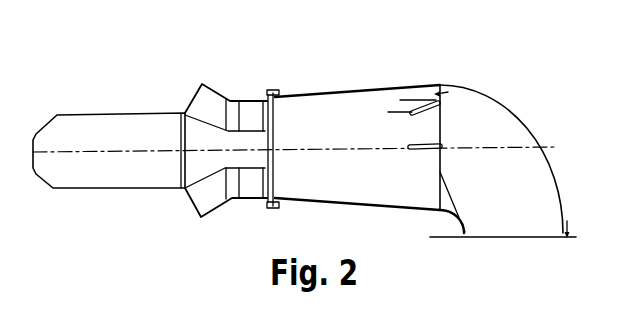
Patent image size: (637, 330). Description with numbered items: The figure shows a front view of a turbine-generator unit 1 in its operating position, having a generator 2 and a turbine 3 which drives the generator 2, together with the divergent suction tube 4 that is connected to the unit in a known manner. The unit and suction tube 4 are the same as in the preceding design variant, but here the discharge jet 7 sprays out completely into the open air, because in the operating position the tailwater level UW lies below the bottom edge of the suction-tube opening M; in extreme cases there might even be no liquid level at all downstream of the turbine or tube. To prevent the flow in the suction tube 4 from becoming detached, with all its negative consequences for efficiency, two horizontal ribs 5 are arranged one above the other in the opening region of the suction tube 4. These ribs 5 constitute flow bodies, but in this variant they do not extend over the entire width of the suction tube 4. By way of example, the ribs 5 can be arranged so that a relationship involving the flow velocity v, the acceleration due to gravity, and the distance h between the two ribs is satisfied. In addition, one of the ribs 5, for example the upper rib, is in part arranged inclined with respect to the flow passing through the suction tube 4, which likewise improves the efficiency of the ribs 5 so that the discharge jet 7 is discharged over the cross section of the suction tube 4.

The turbine-generator unit 1 is at (150, 206).
The generator 2 is at (135, 133).
The turbine 3 is at (252, 122).
The suction tube 4 is at (340, 93).
The horizontal rib 5 is at (432, 145).
The discharge jet 7 is at (500, 182).
The flow velocity v is at (446, 101).
The distance between the two ribs h is at (392, 117).
The suction-tube opening M is at (470, 251).
The tailwater level UW is at (583, 227).